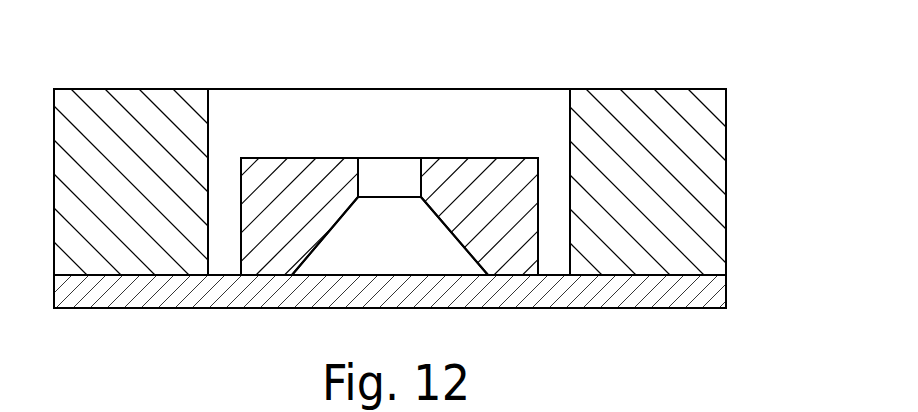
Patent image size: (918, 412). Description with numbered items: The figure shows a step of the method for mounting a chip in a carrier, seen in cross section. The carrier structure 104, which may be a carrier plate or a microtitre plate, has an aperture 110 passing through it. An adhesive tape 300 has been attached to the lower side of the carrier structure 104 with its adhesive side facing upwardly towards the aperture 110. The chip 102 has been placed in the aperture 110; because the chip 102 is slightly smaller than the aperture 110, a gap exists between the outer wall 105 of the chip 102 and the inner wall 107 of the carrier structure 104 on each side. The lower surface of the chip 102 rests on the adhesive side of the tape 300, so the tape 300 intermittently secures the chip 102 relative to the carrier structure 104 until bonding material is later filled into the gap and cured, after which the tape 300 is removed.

The chip 102 is at (278, 173).
The carrier structure 104 is at (638, 117).
The outer wall of the chip 105 is at (240, 253).
The inner wall of the carrier structure 107 is at (208, 128).
The aperture 110 is at (367, 112).
The adhesive tape 300 is at (660, 290).